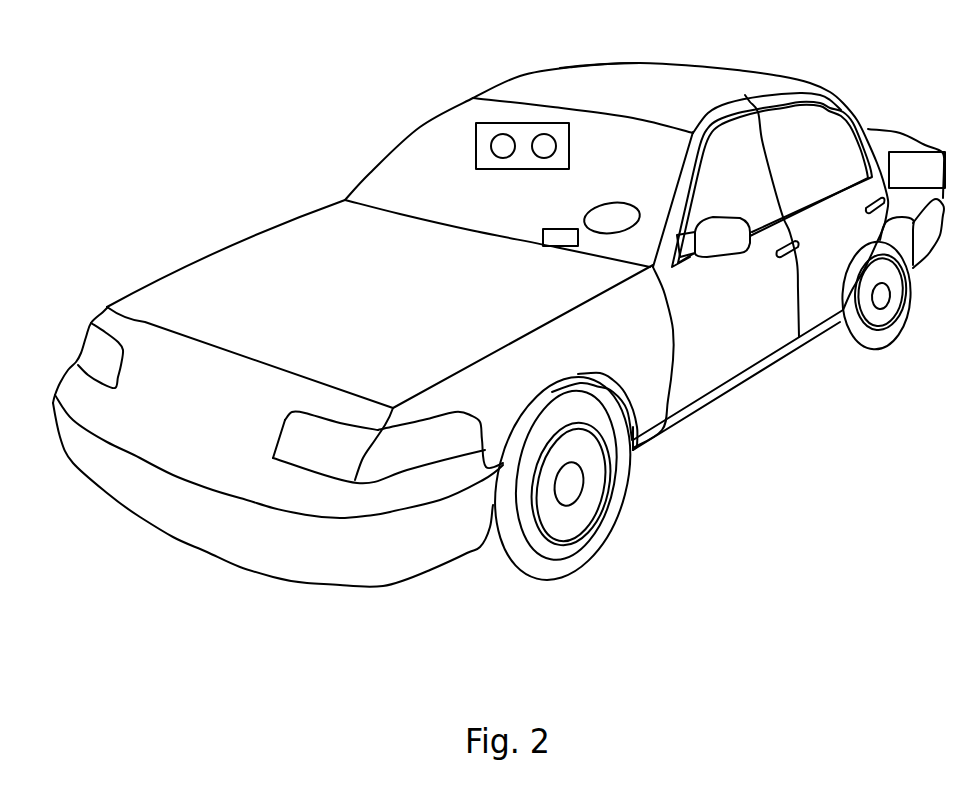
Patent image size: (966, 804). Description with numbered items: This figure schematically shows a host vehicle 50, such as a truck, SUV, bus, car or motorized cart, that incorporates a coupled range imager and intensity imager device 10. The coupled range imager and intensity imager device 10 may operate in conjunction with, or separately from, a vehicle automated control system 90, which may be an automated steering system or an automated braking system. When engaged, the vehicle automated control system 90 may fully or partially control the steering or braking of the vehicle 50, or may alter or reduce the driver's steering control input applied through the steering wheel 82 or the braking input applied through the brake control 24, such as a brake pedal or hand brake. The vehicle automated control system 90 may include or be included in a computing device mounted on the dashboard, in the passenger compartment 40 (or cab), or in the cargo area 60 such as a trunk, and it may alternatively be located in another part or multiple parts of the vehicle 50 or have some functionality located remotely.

The vehicle 50 is at (317, 115).
The passenger compartment 40 is at (578, 65).
The coupled range imager and intensity imager device 10 is at (475, 141).
The brake control 24 is at (544, 232).
The steering wheel 82 is at (616, 202).
The cargo area 60 is at (873, 128).
The vehicle automated control system 90 is at (932, 182).